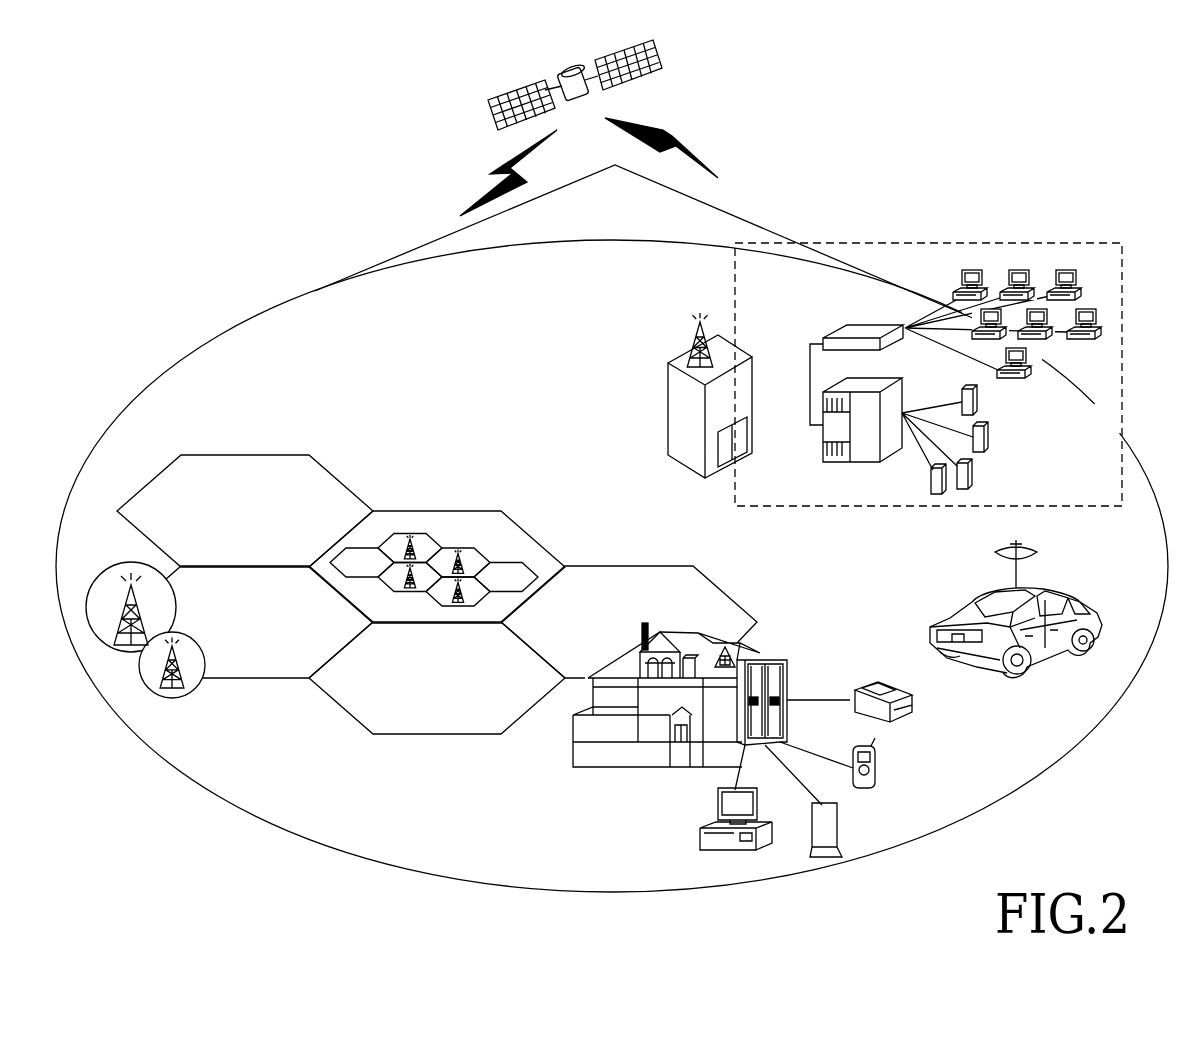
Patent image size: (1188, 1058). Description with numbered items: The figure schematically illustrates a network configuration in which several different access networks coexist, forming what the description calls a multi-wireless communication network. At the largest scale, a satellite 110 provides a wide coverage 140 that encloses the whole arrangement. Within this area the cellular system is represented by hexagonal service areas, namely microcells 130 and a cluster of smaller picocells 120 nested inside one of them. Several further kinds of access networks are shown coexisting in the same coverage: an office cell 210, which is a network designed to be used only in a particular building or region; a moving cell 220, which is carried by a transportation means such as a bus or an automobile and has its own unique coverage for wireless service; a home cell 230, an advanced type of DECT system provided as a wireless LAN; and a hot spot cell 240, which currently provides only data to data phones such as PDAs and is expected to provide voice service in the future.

The satellite 110 is at (664, 51).
The picocells 120 is at (531, 558).
The microcells 130 is at (268, 455).
The wide coverage 140 is at (207, 342).
The office cell 210 is at (904, 358).
The moving cell 220 is at (1018, 623).
The home cell 230 is at (723, 740).
The hot spot cell 240 is at (131, 645).